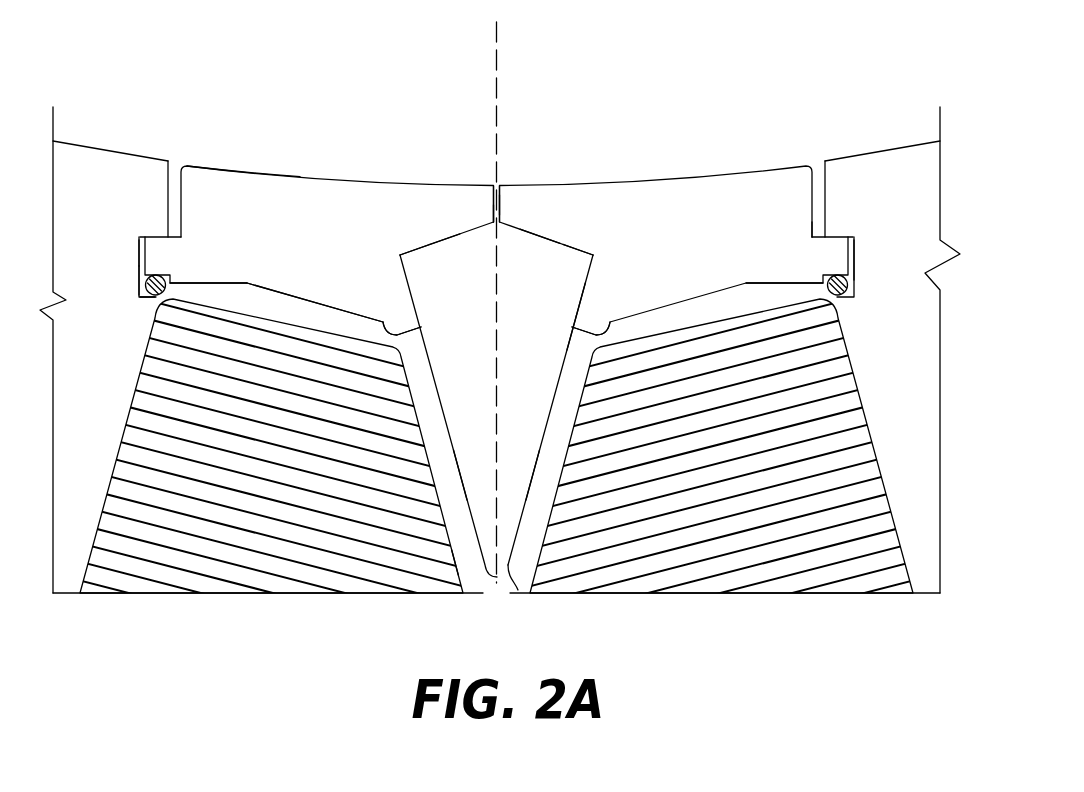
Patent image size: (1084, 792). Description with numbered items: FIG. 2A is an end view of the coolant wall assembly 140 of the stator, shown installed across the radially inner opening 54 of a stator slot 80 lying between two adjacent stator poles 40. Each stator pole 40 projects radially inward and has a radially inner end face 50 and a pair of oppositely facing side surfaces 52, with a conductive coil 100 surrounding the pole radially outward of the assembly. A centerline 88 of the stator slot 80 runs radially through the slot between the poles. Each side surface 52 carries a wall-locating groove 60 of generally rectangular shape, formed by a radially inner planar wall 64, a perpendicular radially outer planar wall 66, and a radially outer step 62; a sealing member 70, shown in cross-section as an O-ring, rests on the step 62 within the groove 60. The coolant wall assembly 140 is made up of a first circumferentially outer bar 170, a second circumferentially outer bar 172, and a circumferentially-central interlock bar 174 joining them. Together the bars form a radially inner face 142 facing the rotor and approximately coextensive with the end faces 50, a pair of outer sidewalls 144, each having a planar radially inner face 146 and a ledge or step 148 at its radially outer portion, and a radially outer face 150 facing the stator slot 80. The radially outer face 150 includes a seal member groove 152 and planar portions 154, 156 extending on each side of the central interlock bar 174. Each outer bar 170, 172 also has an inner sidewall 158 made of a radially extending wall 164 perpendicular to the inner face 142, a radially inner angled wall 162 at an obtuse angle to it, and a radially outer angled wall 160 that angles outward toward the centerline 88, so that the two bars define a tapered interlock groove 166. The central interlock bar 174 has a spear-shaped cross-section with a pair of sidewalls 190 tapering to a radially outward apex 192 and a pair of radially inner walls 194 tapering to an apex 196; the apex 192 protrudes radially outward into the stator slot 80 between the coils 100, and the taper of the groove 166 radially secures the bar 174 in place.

The stator pole 40 is at (98, 386).
The radially inner end face 50 is at (117, 152).
The side surface 52 is at (110, 482).
The radially inner opening 54 is at (169, 180).
The wall-locating groove 60 is at (112, 240).
The radially outer step 62 is at (139, 303).
The radially inner planar wall 64 is at (140, 238).
The radially outer planar wall 66 is at (138, 255).
The sealing member 70 is at (144, 286).
The stator slot 80 is at (453, 523).
The centerline 88 is at (500, 62).
The conductive coil 100 is at (222, 592).
The coolant wall assembly 140 is at (374, 109).
The radially inner face 142 is at (522, 152).
The outer sidewall 144 is at (169, 204).
The radially inner face of sidewall 146 is at (814, 176).
The radially inner ledge 148 is at (818, 246).
The radially outer face 150 is at (304, 315).
The seal member groove 152 is at (828, 282).
The planar portion 154 is at (247, 284).
The planar portion 156 is at (496, 344).
The inner sidewall 158 is at (445, 254).
The radially outer angled planar wall 160 is at (580, 289).
The radially inner angled planar wall 162 is at (543, 240).
The radially extending wall 164 is at (494, 205).
The interlock groove 166 is at (563, 317).
The first circumferentially outer bar 170 is at (711, 244).
The second circumferentially outer bar 172 is at (316, 233).
The circumferentially-central interlock bar 174 is at (478, 399).
The sidewall of interlock bar 190 is at (447, 447).
The radially outward apex 192 is at (518, 590).
The radially inner wall 194 is at (416, 250).
The apex 196 is at (495, 238).